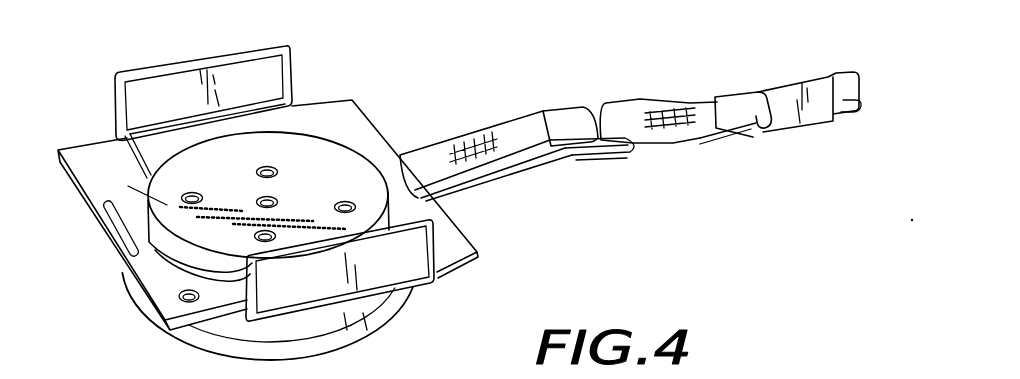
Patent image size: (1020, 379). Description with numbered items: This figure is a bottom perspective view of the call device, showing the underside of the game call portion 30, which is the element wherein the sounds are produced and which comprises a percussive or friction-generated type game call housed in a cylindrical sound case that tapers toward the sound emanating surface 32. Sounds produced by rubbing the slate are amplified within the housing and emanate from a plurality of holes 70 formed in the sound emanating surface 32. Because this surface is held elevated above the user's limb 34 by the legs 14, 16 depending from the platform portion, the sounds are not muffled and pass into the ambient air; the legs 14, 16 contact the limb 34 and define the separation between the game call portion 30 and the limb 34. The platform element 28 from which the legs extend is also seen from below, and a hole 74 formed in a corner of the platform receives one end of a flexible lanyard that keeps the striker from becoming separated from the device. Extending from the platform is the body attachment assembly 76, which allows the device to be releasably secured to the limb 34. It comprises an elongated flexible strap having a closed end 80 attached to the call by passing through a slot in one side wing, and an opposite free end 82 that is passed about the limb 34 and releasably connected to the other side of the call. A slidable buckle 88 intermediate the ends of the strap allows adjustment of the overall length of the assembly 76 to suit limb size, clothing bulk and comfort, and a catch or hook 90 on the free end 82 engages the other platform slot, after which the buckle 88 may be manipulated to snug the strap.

The leg 14 is at (310, 36).
The leg 16 is at (433, 268).
The base plate 28 is at (455, 248).
The game call portion 30 is at (314, 142).
The sound emanating surface 32 is at (128, 182).
The user's limb 34 is at (118, 260).
The holes 70 is at (345, 200).
The hole 74 is at (181, 302).
The body attachment assembly 76 is at (633, 94).
The closed end 80 is at (484, 183).
The free end 82 is at (734, 140).
The slidable buckle 88 is at (613, 156).
The catch or hook 90 is at (783, 85).